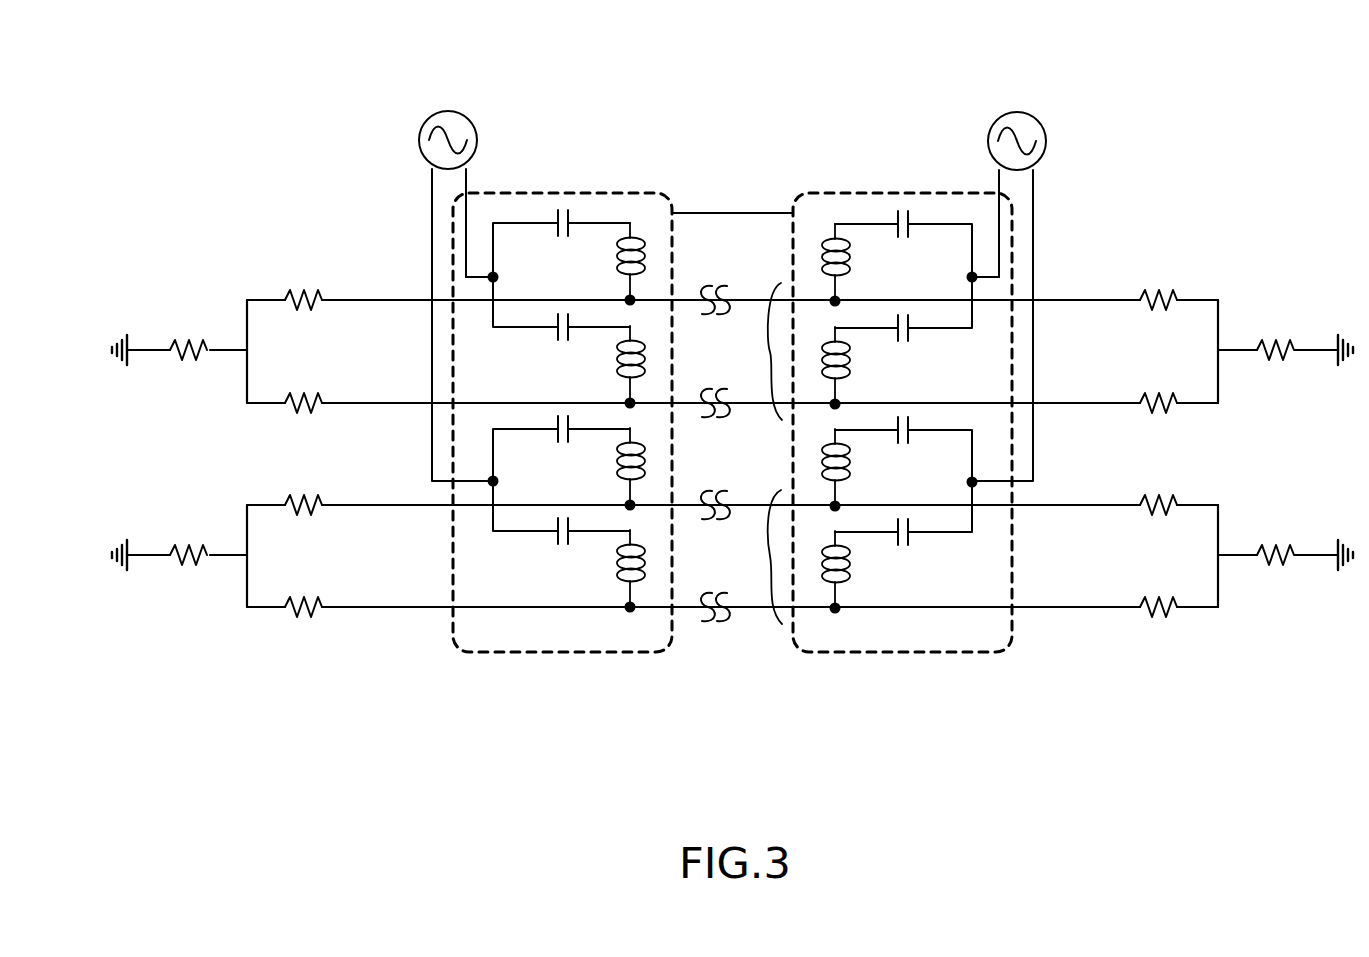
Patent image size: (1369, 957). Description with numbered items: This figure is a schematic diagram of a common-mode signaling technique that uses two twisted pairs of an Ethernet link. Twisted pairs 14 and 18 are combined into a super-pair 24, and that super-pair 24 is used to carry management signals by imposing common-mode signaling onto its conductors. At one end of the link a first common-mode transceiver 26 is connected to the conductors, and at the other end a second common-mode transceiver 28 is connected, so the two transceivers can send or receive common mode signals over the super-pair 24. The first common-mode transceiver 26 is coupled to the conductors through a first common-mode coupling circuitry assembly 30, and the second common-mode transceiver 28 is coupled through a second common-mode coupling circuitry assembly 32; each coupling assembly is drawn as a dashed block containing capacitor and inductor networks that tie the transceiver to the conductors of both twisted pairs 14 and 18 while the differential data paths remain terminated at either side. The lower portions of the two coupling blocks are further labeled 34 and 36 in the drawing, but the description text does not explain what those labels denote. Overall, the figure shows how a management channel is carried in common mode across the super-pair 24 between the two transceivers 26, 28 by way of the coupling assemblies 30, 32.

The twisted pair 14 is at (770, 352).
The twisted pair 18 is at (767, 558).
The super-pair 24 is at (110, 432).
The first common-mode transceiver 26 is at (466, 114).
The second common-mode transceiver 28 is at (1028, 116).
The first common-mode coupling circuitry assembly 30 is at (591, 194).
The second common-mode coupling circuitry assembly 32 is at (865, 194).
The first compensation network 34 is at (560, 700).
The second compensation network 36 is at (905, 700).